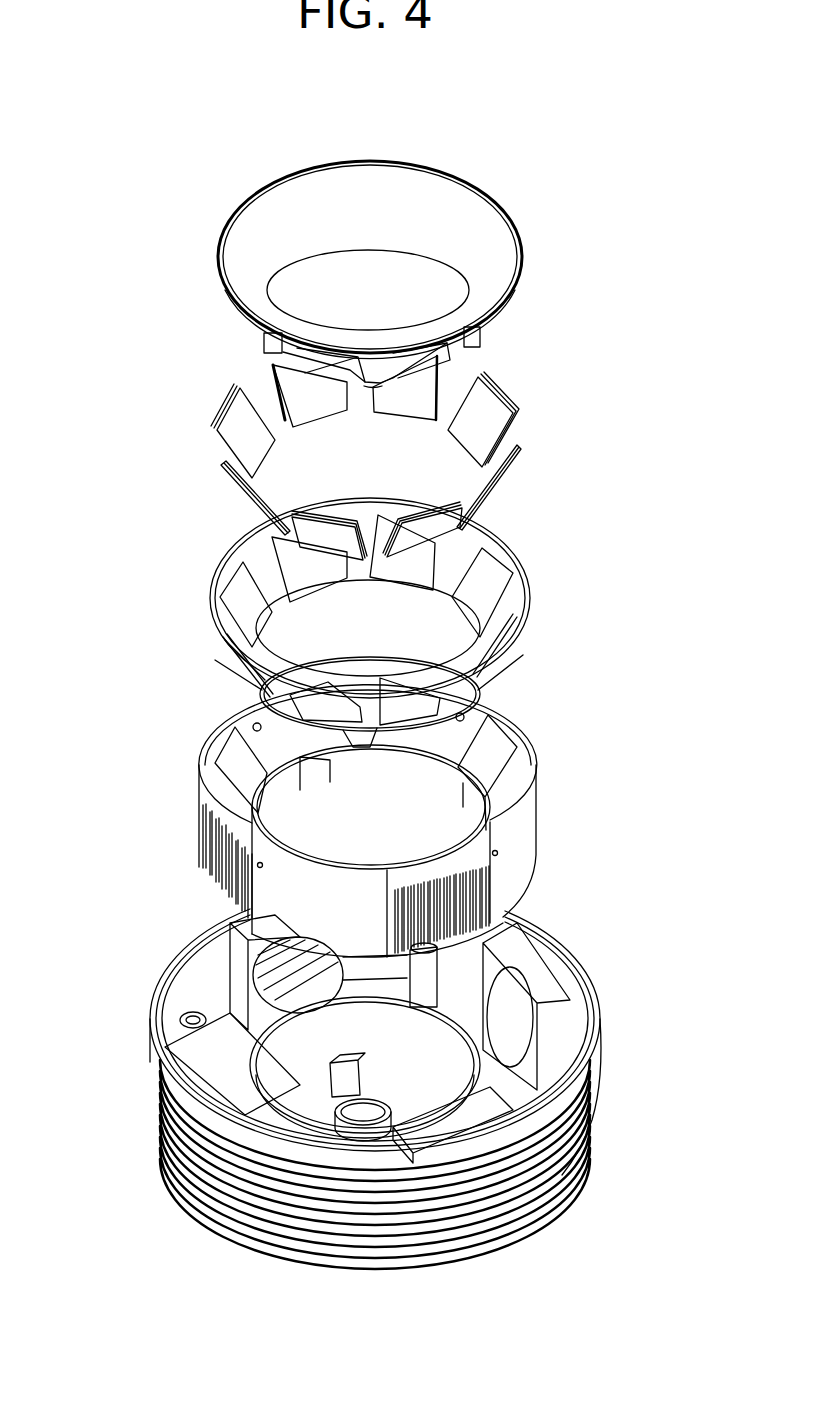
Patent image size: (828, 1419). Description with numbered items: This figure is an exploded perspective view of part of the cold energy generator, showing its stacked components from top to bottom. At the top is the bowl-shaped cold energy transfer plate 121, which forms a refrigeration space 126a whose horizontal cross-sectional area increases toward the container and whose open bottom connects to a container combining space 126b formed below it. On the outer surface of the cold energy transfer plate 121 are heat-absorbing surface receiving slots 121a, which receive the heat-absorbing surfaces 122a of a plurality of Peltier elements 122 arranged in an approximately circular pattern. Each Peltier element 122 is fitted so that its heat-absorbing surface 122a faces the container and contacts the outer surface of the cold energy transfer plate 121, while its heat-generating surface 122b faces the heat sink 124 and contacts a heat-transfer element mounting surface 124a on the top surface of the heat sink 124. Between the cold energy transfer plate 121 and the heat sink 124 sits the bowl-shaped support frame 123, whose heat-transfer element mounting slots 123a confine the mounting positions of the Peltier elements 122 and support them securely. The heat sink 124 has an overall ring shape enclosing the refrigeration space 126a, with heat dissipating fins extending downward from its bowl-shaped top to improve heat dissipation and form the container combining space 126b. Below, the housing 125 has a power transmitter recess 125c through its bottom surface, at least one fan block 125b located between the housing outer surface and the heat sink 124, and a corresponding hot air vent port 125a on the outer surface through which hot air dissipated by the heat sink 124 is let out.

The cold energy transfer plate 121 is at (415, 270).
The heat-absorbing surface receiving slot 121a is at (448, 368).
The Peltier element 122 is at (425, 466).
The heat-absorbing surface 122a is at (500, 395).
The heat-generating surface 122b is at (527, 459).
The support frame 123 is at (417, 622).
The heat-transfer element mounting slot 123a is at (481, 595).
The heat sink 124 is at (409, 819).
The heat-transfer element mounting surface 124a is at (490, 748).
The housing 125 is at (370, 1114).
The hot air vent port 125a is at (483, 1183).
The fan block 125b is at (545, 1103).
The power transmitter recess 125c is at (372, 1133).
The refrigeration space 126a is at (376, 207).
The container combining space 126b is at (153, 1057).